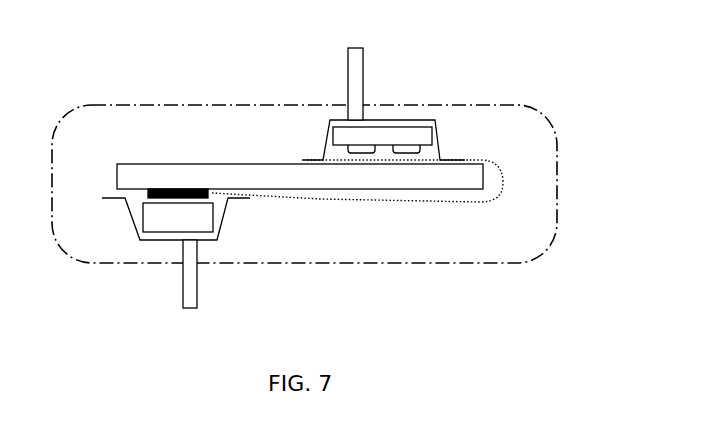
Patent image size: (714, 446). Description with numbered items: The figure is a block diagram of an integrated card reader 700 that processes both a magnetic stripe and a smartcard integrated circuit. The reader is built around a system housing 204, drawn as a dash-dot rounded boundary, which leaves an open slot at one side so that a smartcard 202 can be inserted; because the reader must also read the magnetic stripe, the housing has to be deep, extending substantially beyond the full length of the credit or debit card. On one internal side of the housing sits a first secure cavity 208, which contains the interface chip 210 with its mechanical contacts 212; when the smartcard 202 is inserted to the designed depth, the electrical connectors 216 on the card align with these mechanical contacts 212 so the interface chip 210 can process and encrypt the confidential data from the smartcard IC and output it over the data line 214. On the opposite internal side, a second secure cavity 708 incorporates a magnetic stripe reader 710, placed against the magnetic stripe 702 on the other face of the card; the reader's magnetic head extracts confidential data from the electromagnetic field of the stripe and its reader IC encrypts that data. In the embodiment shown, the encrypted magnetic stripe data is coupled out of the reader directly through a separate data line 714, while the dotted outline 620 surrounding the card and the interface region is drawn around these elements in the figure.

The integrated card reader 700 is at (302, 325).
The system housing 204 is at (544, 115).
The smartcard 202 is at (117, 165).
The magnetic stripe 702 is at (184, 189).
The second secure cavity 708 is at (223, 215).
The magnetic stripe reader 710 is at (197, 226).
The separate data line 714 is at (183, 303).
The first secure cavity 208 is at (439, 150).
The data line 214 is at (366, 50).
The interface chip 210 is at (394, 132).
The mechanical contacts 212 is at (350, 153).
The electrical connectors 216 is at (410, 153).
The conformal coating outline 620 is at (483, 203).